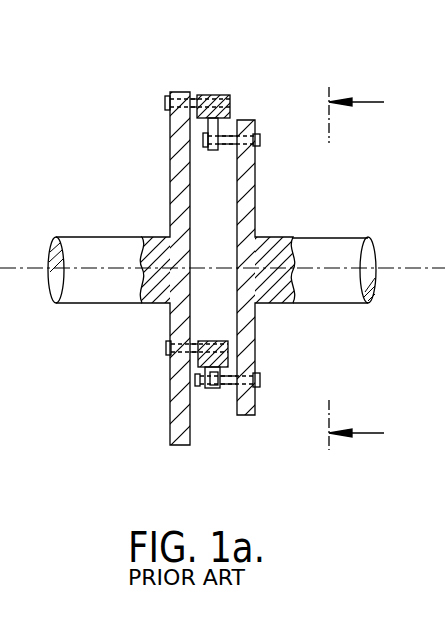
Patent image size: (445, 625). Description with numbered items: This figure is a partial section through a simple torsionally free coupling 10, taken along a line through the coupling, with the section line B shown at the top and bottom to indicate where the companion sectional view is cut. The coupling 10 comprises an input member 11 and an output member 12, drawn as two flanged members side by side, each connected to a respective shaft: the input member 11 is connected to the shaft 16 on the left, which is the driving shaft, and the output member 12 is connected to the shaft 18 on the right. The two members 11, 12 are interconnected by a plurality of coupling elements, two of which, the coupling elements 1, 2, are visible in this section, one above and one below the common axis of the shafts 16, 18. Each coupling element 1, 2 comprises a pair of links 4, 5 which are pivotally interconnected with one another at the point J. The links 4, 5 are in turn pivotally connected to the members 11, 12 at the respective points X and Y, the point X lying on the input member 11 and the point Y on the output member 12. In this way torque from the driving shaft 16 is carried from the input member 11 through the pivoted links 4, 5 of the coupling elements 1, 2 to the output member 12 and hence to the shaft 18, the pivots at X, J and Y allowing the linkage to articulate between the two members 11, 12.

The coupling element 1 is at (211, 240).
The coupling element 2 is at (191, 415).
The link 4 is at (228, 94).
The link 5 is at (233, 119).
The coupling 10 is at (190, 240).
The input member 11 is at (170, 410).
The output member 12 is at (255, 410).
The shaft 16 is at (95, 297).
The shaft 18 is at (350, 296).
The point J is at (198, 380).
The point X is at (165, 104).
The point Y is at (260, 140).
The line B- B is at (369, 269).